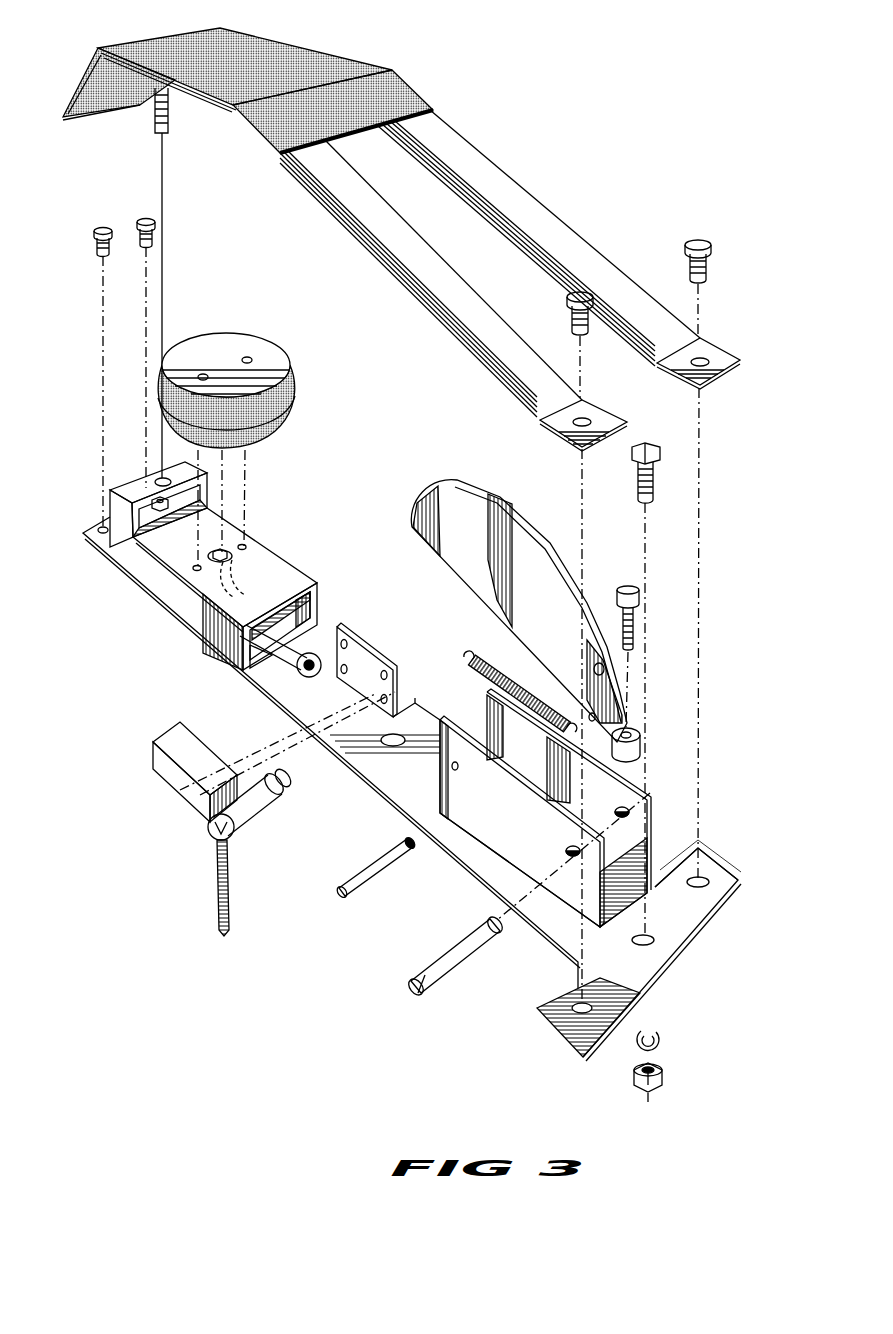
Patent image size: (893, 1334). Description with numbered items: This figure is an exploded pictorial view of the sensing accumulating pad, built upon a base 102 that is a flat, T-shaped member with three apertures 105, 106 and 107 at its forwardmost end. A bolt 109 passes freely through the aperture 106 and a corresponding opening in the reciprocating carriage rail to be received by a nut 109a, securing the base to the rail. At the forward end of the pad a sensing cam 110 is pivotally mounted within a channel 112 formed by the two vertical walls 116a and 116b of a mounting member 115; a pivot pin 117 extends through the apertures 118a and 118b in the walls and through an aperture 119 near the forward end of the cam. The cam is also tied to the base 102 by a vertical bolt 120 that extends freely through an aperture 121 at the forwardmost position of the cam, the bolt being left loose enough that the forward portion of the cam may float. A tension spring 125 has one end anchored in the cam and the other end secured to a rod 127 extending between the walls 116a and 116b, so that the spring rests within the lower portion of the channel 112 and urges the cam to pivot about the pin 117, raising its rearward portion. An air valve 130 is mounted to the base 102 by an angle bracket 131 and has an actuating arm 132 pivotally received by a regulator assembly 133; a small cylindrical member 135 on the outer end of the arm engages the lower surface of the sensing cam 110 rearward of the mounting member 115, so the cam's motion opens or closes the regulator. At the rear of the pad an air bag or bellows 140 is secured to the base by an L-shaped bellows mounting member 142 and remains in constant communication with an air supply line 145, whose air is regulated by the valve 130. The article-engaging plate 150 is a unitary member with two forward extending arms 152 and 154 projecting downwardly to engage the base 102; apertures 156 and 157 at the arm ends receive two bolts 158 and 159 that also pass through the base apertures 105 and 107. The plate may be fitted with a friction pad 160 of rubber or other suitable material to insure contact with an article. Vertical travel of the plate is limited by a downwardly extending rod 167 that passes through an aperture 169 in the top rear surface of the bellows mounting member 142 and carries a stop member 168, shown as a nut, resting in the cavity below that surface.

The friction pad 160 is at (288, 53).
The article-engaging plate 150 is at (208, 100).
The downwardly extending rod 167 is at (157, 108).
The forward extending arm 152 is at (452, 145).
The forward extending arm 154 is at (391, 220).
The aperture 156 is at (703, 357).
The aperture 157 is at (587, 415).
The bolt 158 is at (568, 304).
The bolt 159 is at (687, 254).
The bolt 109 is at (638, 446).
The nut 109a is at (664, 1066).
The air bag or bellows 140 is at (272, 377).
The aperture 169 is at (157, 481).
The stop member 168 is at (160, 513).
The bellows mounting member 142 is at (175, 597).
The air supply line 145 is at (312, 607).
The angle bracket 131 is at (371, 648).
The base 102 is at (426, 789).
The aperture 105 is at (710, 877).
The aperture 106 is at (650, 948).
The aperture 107 is at (575, 1002).
The channel 112 is at (541, 797).
The vertical wall 116a is at (443, 770).
The vertical wall 116b is at (633, 848).
The mounting member 115 is at (500, 858).
The aperture 118a is at (566, 852).
The aperture 118b is at (628, 810).
The sensing cam 110 is at (457, 479).
The aperture 119 is at (594, 665).
The vertical bolt 120 is at (624, 589).
The aperture 121 is at (640, 732).
The tension spring 125 is at (475, 653).
The air valve 130 is at (266, 814).
The actuating arm 132 is at (250, 830).
The small cylindrical member 135 is at (283, 781).
The regulator assembly 133 is at (186, 703).
The rod 127 is at (348, 879).
The pivot pin 117 is at (440, 963).